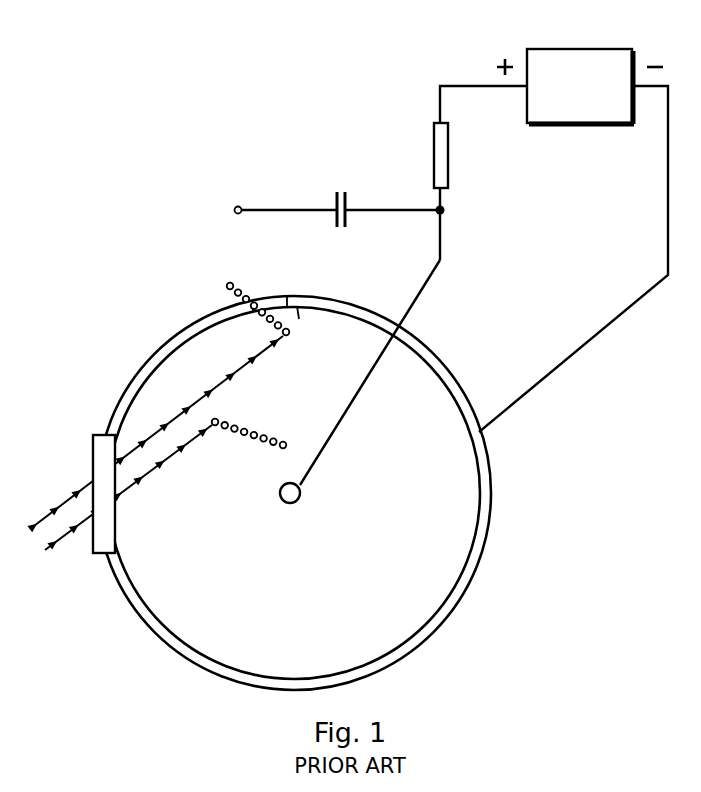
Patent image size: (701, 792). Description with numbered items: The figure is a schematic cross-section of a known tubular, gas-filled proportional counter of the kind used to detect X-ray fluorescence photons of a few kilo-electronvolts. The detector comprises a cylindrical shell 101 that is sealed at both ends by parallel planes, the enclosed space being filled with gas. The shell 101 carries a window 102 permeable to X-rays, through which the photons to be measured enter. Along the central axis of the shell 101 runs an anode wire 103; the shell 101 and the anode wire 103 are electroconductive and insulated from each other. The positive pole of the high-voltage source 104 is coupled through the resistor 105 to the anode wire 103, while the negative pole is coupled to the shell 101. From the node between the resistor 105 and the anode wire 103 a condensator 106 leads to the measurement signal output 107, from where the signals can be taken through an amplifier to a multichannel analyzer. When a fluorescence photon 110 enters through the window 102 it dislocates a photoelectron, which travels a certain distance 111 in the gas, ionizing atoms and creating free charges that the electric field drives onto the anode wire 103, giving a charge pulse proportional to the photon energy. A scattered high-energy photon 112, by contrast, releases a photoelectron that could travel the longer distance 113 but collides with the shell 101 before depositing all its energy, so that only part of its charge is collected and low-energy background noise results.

The cylindrical shell 101 is at (152, 357).
The window 102 is at (93, 450).
The anode wire 103 is at (290, 503).
The high-voltage source 104 is at (573, 49).
The resistor 105 is at (434, 150).
The condensator 106 is at (333, 200).
The measurement signal output 107 is at (234, 208).
The fluorescence photon 110 is at (50, 547).
The proceeding distance of a photoelectron 111 is at (220, 408).
The scattered high-energy photon 112 is at (48, 512).
The distance of a high-energy photoelectron 113 is at (237, 267).